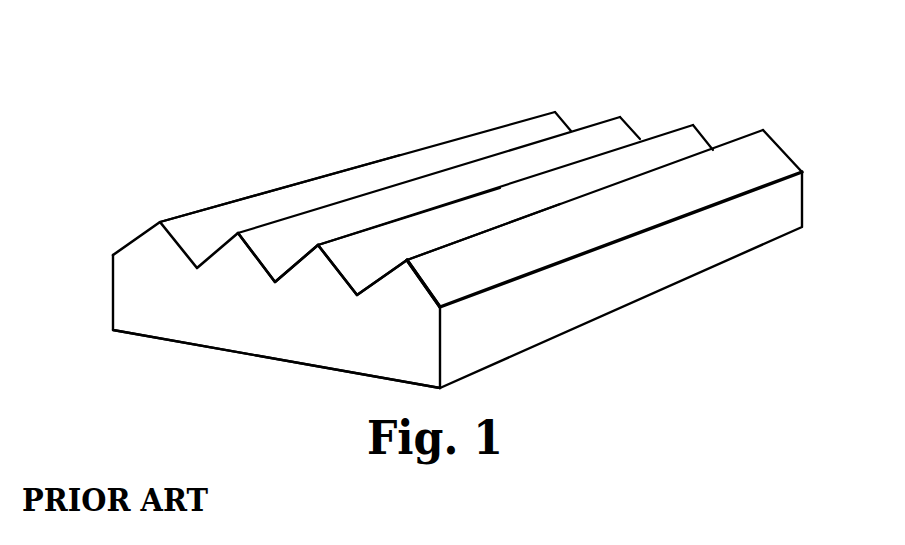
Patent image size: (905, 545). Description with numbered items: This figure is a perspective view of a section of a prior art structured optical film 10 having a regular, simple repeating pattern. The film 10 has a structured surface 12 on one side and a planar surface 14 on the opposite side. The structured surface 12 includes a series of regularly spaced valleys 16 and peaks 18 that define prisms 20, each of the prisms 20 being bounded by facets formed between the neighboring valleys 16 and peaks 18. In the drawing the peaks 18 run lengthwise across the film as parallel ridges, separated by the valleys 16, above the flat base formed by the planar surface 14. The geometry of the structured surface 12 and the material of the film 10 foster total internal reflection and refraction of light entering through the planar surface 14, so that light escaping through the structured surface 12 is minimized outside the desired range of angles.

The structured optical film 10 is at (643, 96).
The structured surface 12 is at (197, 211).
The planar surface 14 is at (248, 355).
The valleys 16 is at (353, 286).
The peaks 18 is at (321, 241).
The prisms 20 is at (400, 282).